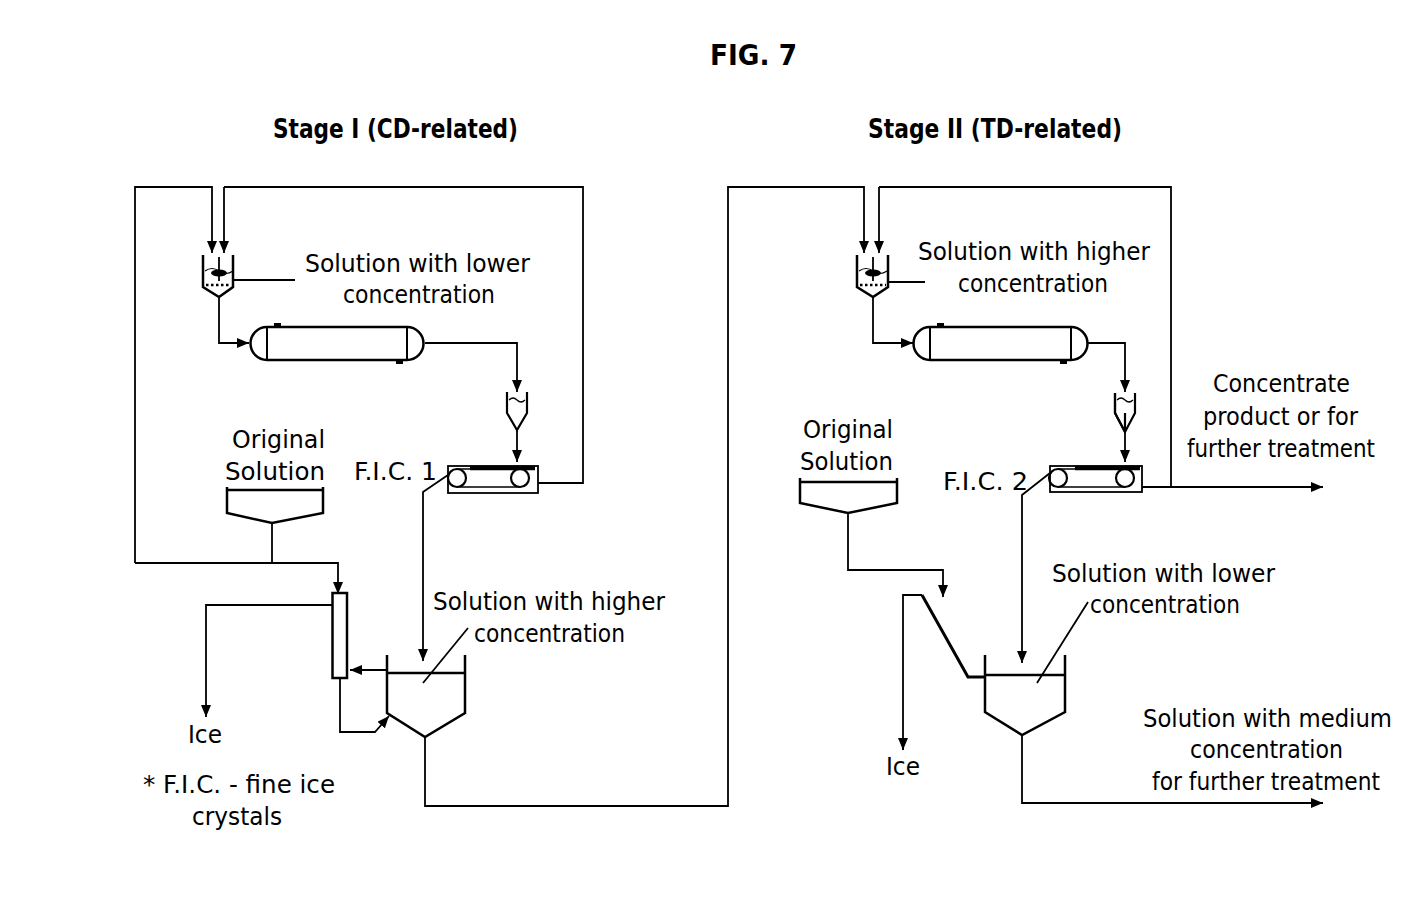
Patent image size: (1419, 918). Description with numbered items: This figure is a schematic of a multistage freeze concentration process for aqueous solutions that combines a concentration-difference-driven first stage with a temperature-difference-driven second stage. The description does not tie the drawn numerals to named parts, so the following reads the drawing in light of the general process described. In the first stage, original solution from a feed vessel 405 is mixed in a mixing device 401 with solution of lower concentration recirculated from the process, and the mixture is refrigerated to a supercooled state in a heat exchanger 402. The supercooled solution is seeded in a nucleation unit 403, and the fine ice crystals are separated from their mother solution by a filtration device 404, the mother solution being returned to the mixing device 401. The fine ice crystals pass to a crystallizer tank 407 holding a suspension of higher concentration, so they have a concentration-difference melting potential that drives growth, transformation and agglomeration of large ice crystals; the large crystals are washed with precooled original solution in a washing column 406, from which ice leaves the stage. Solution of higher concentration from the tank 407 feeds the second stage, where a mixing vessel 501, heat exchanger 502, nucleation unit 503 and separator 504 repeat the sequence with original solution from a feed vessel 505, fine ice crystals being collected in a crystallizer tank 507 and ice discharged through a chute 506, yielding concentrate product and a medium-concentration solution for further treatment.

The mixing vessel (Stage I) 401 is at (230, 265).
The heat exchanger (Stage I) 402 is at (318, 352).
The fine ice crystal separator (Stage I) 403 is at (514, 411).
The conveyor belt (Stage I) 404 is at (485, 494).
The original solution tank (Stage I) 405 is at (227, 508).
The ice washing column (Stage I) 406 is at (331, 658).
The collection tank for solution with higher concentration (Stage I) 407 is at (443, 723).
The mixing vessel (Stage II) 501 is at (857, 285).
The heat exchanger (Stage II) 502 is at (968, 350).
The fine ice crystal separator (Stage II) 503 is at (1122, 412).
The conveyor belt (Stage II) 504 is at (1085, 477).
The original solution tank (Stage II) 505 is at (817, 507).
The ice chute (Stage II) 506 is at (948, 645).
The collection tank for solution with lower concentration (Stage II) 507 is at (1052, 722).